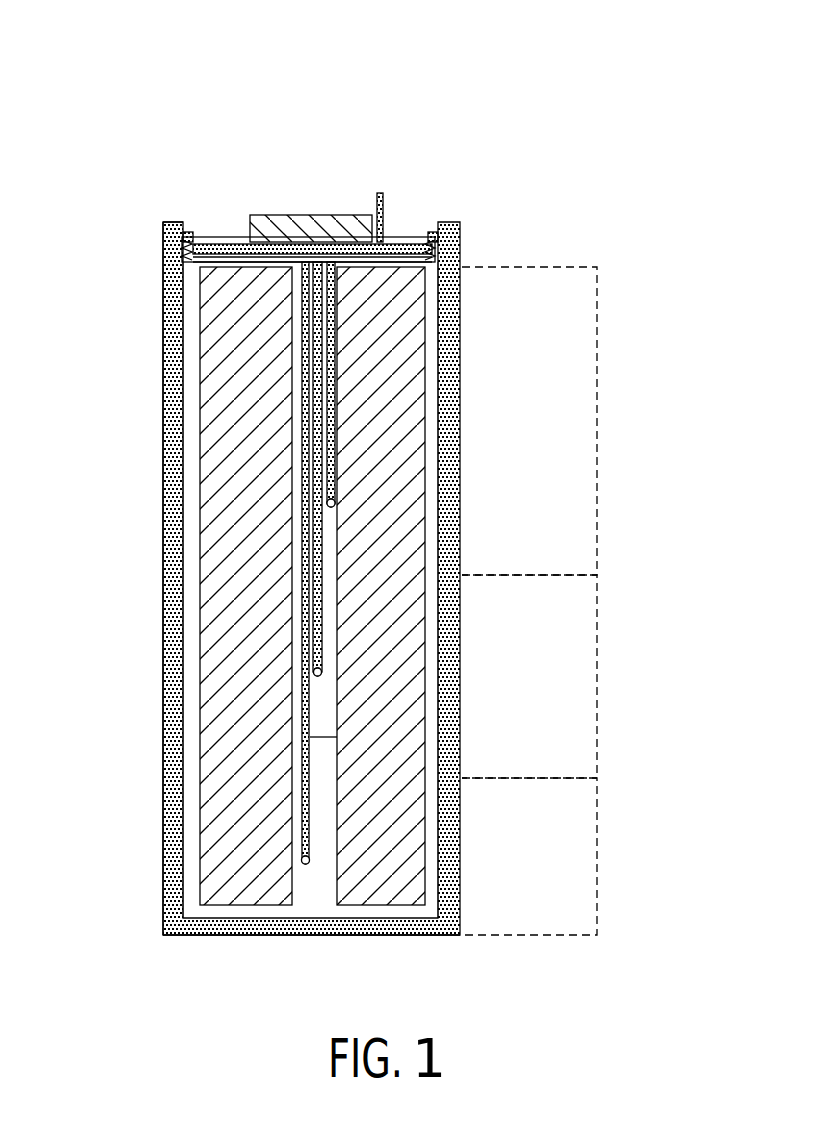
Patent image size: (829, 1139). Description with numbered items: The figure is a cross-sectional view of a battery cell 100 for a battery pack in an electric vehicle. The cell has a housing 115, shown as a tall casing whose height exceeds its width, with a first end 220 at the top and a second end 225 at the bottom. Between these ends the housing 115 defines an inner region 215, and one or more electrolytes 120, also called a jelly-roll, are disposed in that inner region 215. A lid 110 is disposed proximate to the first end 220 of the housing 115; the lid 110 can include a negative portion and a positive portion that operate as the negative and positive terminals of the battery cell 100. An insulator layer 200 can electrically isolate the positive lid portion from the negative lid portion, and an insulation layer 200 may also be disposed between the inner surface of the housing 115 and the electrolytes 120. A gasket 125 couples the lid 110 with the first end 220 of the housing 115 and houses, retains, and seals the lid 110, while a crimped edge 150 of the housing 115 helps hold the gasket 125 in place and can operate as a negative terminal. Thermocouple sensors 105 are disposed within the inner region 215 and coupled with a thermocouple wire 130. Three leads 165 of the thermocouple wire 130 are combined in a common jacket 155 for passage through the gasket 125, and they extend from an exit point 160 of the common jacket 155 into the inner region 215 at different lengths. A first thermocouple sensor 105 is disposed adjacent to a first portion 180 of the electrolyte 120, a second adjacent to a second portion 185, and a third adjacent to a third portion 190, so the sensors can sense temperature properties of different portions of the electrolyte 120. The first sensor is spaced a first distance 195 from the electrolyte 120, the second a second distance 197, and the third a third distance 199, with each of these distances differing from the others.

The battery cell 100 is at (450, 90).
The thermocouple sensor 105 is at (303, 857).
The lid 110 is at (275, 225).
The housing 115 is at (452, 745).
The electrolyte 120 is at (215, 400).
The gasket 125 is at (210, 237).
The thermocouple wire 130 is at (380, 193).
The crimped edge 150 is at (175, 222).
The common jacket 155 is at (345, 262).
The exit point 160 is at (290, 262).
The leads 165 is at (333, 358).
The first portion 180 is at (597, 400).
The second portion 185 is at (597, 648).
The third portion 190 is at (597, 843).
The first distance 195 is at (338, 468).
The second distance 197 is at (325, 612).
The third distance 199 is at (325, 737).
The insulator layer 200 is at (190, 532).
The inner region 215 is at (325, 848).
The first end 220 is at (130, 243).
The second end 225 is at (130, 873).